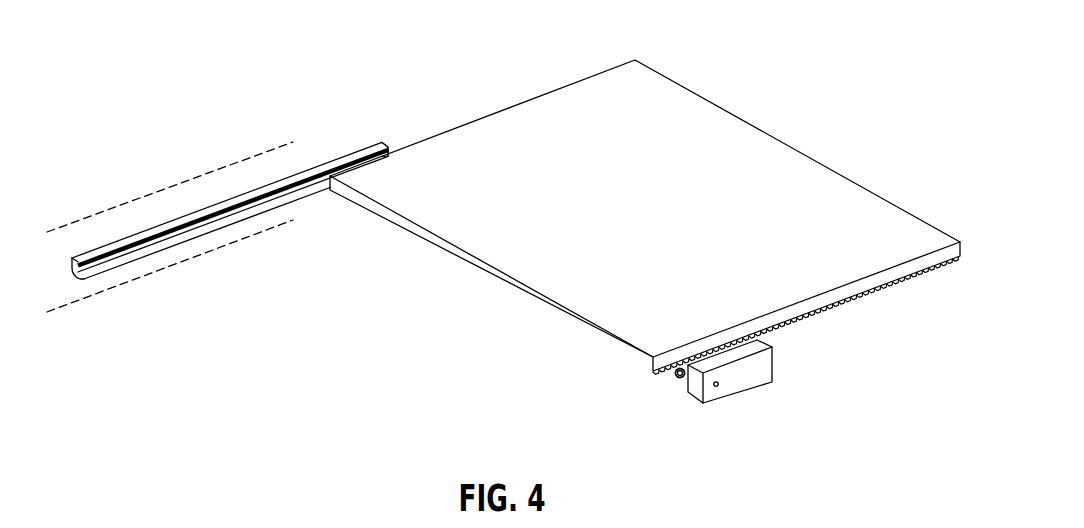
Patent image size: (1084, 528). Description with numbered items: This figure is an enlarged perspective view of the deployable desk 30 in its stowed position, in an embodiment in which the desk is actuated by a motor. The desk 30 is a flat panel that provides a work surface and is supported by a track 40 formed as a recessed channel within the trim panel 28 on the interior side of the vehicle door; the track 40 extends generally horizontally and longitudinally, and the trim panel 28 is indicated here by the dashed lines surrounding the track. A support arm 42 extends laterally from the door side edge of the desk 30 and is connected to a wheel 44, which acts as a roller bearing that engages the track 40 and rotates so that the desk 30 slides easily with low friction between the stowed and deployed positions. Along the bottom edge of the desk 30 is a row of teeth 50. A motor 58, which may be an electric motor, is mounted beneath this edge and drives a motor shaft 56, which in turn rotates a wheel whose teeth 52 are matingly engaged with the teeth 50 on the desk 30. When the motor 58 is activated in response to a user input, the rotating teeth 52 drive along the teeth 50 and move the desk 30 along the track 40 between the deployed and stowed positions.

The trim panel 28 is at (75, 238).
The deployable desk 30 is at (563, 118).
The track 40 is at (97, 263).
The support arm 42 is at (328, 170).
The wheel 44 is at (317, 168).
The teeth 50 is at (865, 293).
The teeth 52 is at (678, 377).
The motor shaft 56 is at (718, 384).
The motor 58 is at (772, 363).